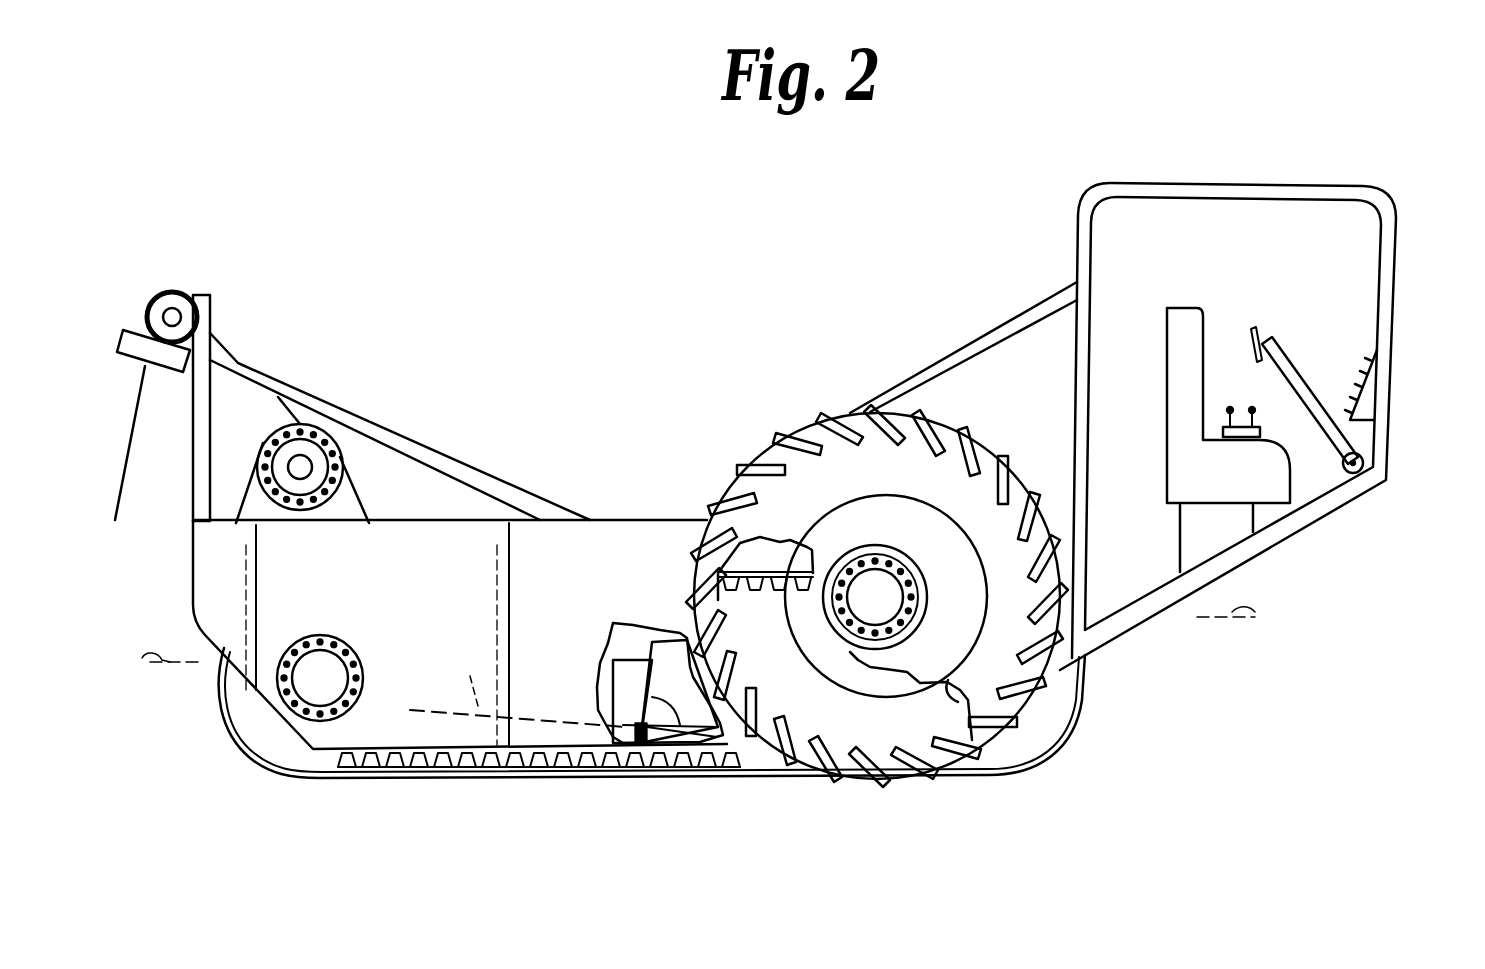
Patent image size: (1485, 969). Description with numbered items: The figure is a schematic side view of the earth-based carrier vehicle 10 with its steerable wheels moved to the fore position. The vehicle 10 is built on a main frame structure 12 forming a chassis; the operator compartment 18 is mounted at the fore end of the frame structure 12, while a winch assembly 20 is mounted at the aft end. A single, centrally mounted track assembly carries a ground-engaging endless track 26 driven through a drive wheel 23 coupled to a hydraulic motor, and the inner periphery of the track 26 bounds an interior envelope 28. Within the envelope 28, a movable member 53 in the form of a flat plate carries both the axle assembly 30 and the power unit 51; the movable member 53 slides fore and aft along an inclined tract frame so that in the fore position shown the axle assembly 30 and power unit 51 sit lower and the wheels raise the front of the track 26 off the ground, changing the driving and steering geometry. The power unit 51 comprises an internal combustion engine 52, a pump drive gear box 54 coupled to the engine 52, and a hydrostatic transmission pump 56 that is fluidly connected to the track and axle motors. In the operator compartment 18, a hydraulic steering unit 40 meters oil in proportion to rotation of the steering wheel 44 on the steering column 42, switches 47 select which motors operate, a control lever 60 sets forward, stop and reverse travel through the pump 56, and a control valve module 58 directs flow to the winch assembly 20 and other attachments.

The carrier vehicle 10 is at (773, 275).
The main frame structure 12 is at (640, 518).
The operator compartment 18 is at (1395, 258).
The winch assembly 20 is at (180, 287).
The drive wheel 23 is at (245, 723).
The endless track 26 is at (395, 782).
The envelope 28 is at (873, 723).
The axle assembly 30 is at (915, 630).
The hydraulic steering unit 40 is at (1270, 338).
The steering column 42 is at (1285, 352).
The steering wheel 44 is at (1250, 325).
The switches 47 is at (1363, 385).
The power unit 51 is at (645, 656).
The internal combustion engine 52 is at (720, 772).
The movable member 53 is at (643, 772).
The pump drive gear box 54 is at (680, 772).
The hydrostatic transmission pump 56 is at (625, 750).
The control valve module 58 is at (1265, 433).
The control lever 60 is at (1232, 405).